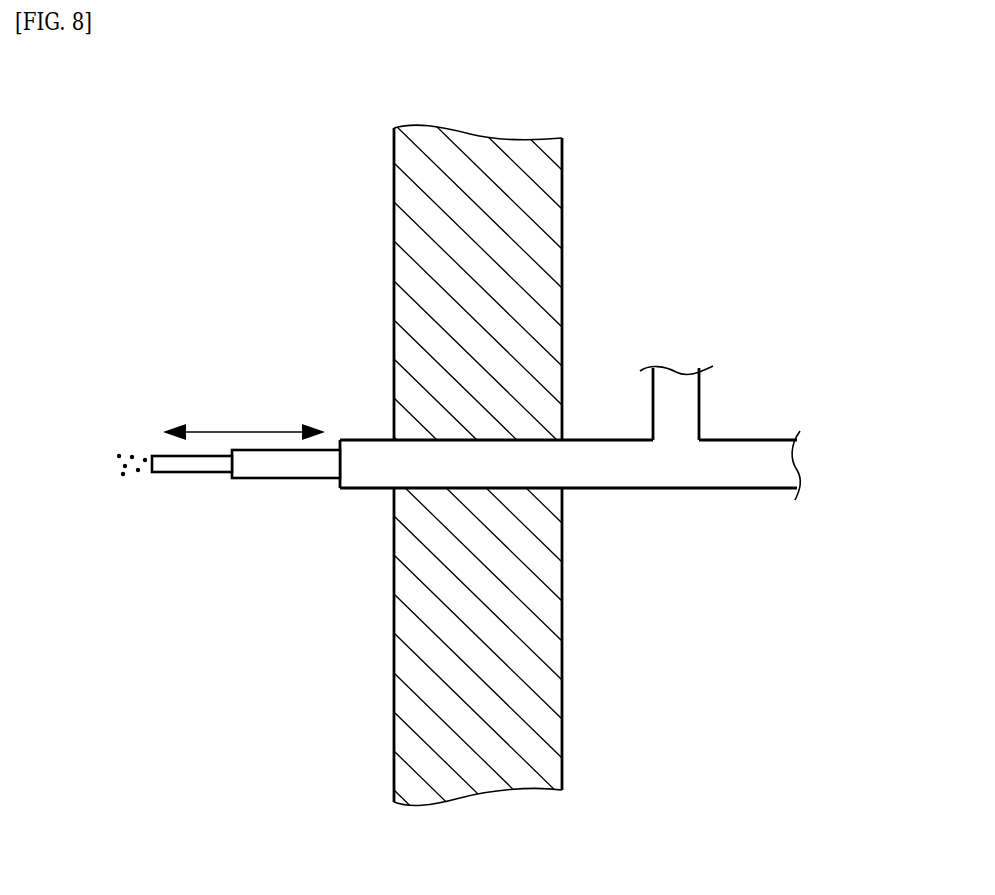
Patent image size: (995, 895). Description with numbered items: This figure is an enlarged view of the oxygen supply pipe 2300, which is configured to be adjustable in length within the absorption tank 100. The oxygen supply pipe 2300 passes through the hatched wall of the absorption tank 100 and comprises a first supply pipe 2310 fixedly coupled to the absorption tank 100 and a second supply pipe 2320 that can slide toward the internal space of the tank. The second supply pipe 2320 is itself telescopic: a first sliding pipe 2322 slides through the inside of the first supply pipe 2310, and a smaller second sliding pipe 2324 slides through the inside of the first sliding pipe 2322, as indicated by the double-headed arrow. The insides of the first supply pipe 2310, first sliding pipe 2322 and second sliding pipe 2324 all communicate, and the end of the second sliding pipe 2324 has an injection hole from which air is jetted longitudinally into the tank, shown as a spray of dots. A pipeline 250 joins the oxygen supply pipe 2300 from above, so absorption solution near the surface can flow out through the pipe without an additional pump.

The absorption tank 100 is at (510, 215).
The pipeline 250 is at (680, 388).
The oxygen supply pipe 2300 is at (566, 453).
The first supply pipe 2310 is at (370, 477).
The second supply pipe 2320 is at (228, 514).
The first sliding pipe 2322 is at (267, 467).
The second sliding pipe 2324 is at (193, 463).